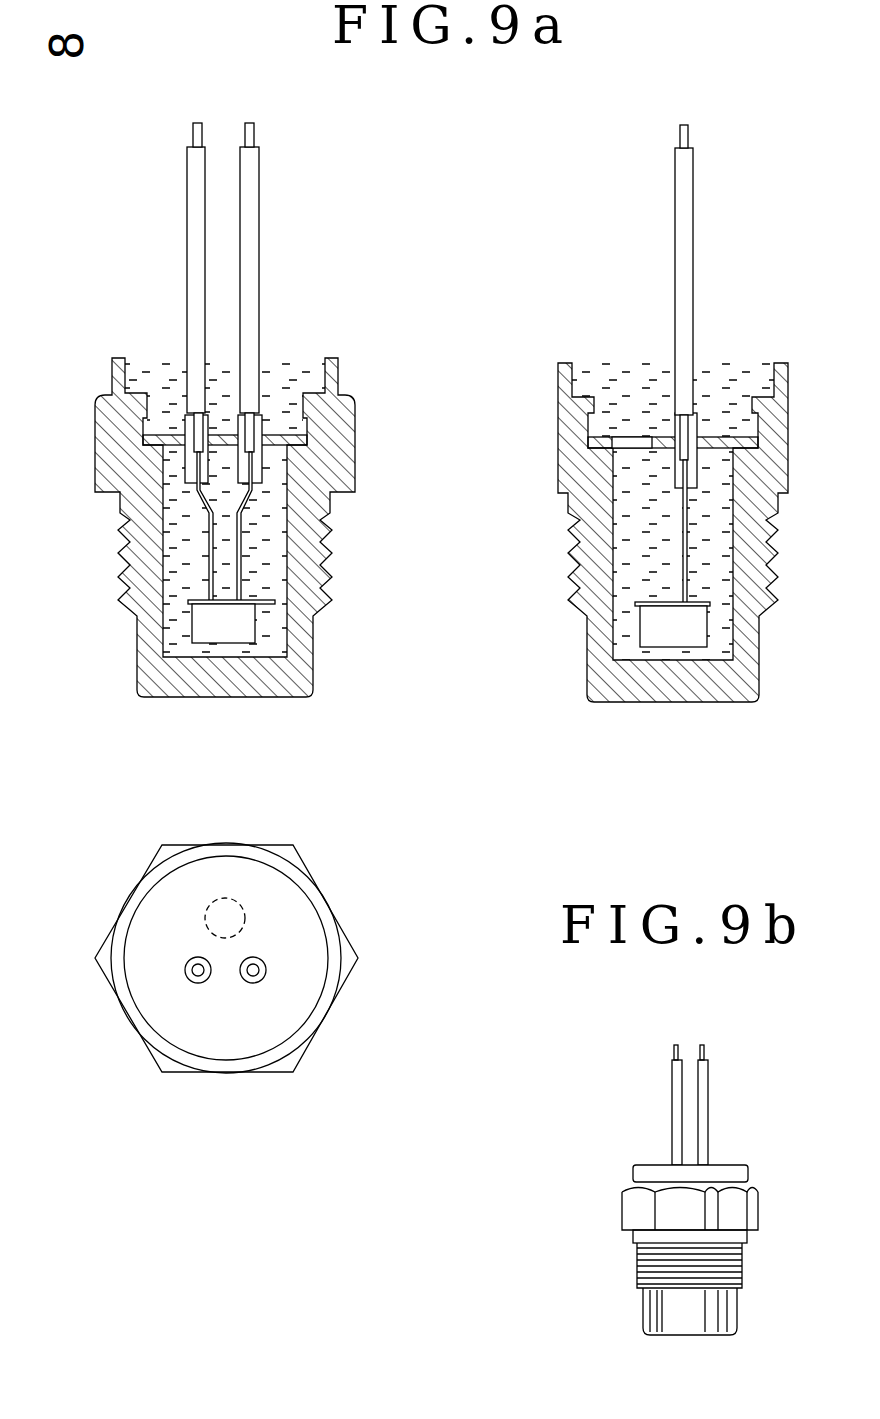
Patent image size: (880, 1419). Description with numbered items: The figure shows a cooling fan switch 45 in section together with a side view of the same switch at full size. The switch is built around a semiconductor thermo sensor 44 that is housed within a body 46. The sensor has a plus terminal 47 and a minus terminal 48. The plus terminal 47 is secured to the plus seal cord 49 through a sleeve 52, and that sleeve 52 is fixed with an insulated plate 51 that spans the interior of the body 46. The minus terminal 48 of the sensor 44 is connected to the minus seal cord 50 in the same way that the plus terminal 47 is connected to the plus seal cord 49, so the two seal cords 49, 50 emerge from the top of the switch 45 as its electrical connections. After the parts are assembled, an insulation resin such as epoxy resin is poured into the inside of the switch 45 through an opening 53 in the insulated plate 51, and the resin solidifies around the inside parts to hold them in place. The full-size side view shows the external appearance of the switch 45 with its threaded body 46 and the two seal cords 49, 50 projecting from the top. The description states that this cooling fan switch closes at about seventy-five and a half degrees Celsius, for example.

The semiconductor thermo sensor 44 is at (207, 635).
The cooling fan switch 45 is at (223, 446).
The body 46 is at (347, 438).
The plus terminal 47 is at (208, 545).
The minus terminal 48 is at (238, 580).
The seal cord 49 is at (188, 308).
The minus seal cord 50 is at (260, 307).
The insulated plate 51 is at (167, 430).
The sleeve 52 is at (260, 465).
The opening 53 is at (633, 445).